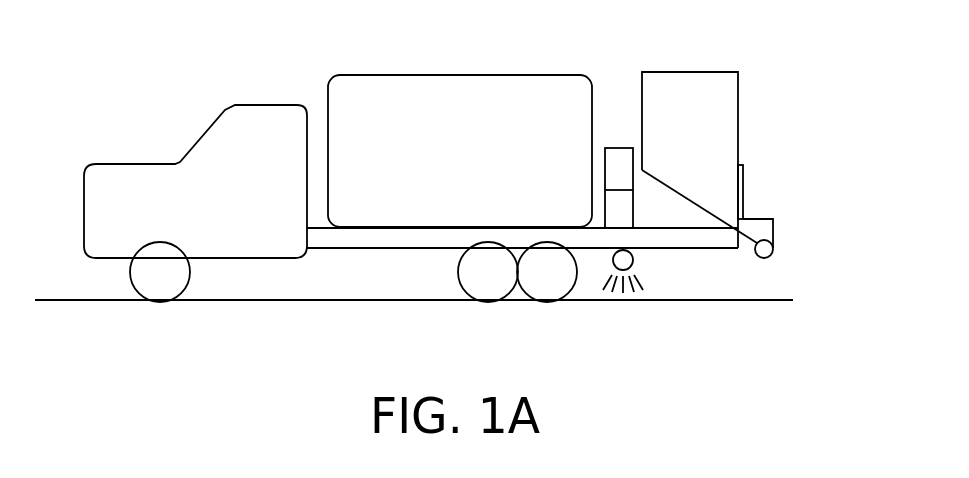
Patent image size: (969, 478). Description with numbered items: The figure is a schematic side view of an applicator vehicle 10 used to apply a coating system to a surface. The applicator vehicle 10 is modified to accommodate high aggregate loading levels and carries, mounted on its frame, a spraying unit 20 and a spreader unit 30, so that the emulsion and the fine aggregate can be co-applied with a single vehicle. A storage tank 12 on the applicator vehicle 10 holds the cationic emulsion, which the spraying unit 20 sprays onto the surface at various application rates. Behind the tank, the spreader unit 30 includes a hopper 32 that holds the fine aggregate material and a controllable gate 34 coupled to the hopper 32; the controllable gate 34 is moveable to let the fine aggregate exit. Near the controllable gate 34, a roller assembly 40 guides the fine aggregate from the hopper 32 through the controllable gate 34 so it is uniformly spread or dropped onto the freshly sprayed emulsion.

The applicator vehicle 10 is at (195, 58).
The storage tank 12 is at (425, 60).
The spraying unit 20 is at (595, 317).
The spreader unit 30 is at (759, 130).
The hopper 32 is at (695, 80).
The controllable gate 34 is at (747, 192).
The roller assembly 40 is at (780, 235).